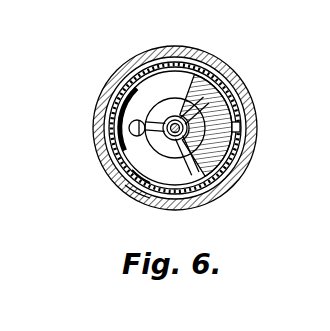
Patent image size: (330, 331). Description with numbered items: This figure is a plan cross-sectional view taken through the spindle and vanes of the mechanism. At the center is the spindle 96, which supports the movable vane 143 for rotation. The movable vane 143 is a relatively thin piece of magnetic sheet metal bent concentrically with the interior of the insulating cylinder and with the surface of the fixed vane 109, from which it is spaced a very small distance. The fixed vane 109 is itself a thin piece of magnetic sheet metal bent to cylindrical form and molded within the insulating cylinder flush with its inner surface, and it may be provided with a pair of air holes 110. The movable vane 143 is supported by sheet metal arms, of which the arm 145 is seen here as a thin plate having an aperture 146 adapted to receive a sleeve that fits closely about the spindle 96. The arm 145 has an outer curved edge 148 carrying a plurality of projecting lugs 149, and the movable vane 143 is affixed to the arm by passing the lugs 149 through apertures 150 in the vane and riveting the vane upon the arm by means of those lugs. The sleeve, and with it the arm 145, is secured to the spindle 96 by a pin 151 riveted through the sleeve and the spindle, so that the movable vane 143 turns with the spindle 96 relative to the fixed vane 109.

The spindle 96 is at (190, 158).
The fixed vane 109 is at (133, 198).
The air holes 110 is at (102, 146).
The movable vane 143 is at (108, 165).
The sheet metal arm 145 is at (134, 166).
The aperture 146 is at (241, 125).
The outer curved edge 148 is at (101, 119).
The projecting lugs 149 is at (127, 93).
The apertures 150 is at (139, 88).
The pin 151 is at (182, 122).